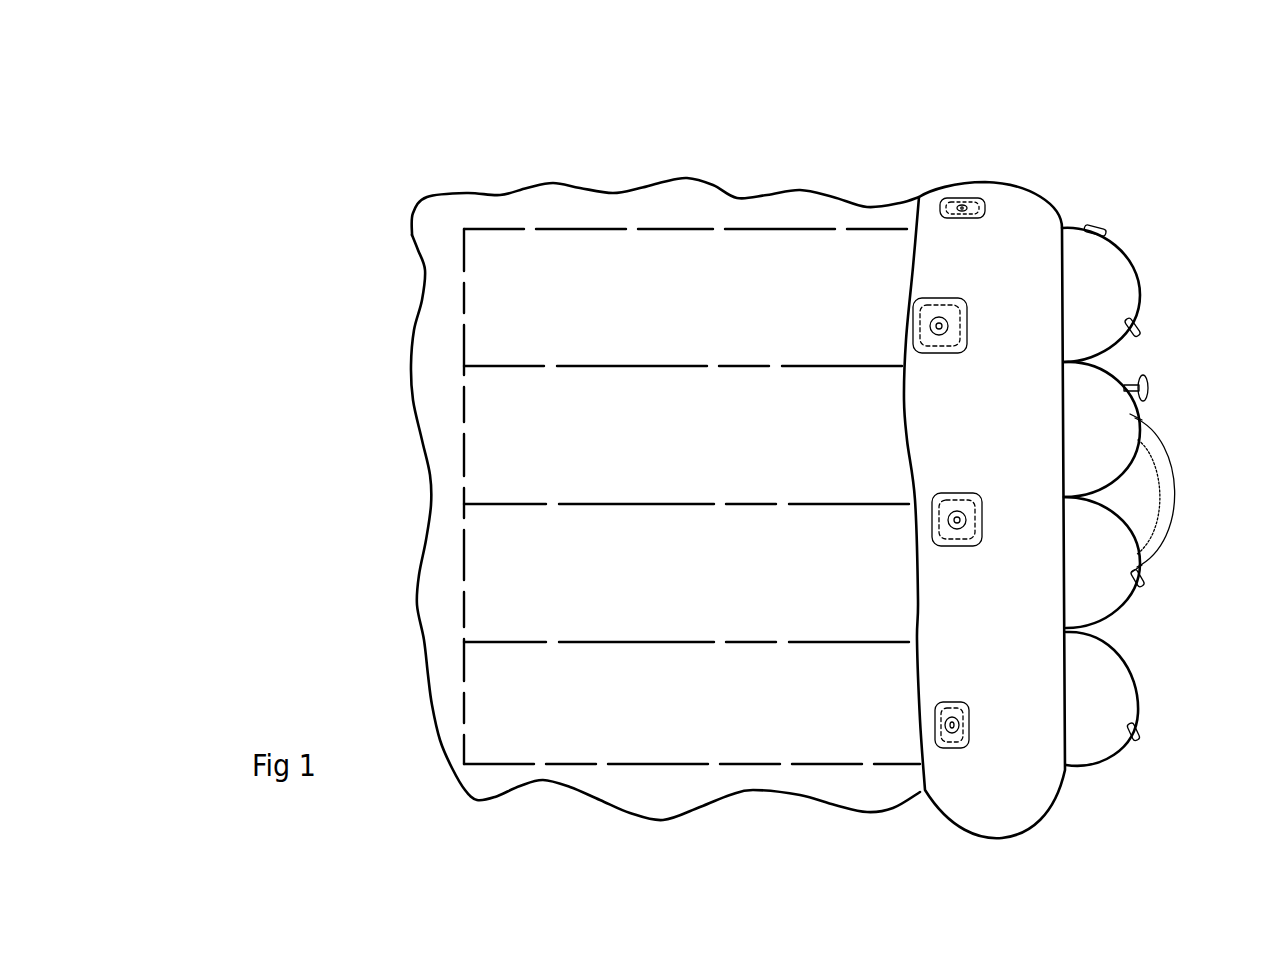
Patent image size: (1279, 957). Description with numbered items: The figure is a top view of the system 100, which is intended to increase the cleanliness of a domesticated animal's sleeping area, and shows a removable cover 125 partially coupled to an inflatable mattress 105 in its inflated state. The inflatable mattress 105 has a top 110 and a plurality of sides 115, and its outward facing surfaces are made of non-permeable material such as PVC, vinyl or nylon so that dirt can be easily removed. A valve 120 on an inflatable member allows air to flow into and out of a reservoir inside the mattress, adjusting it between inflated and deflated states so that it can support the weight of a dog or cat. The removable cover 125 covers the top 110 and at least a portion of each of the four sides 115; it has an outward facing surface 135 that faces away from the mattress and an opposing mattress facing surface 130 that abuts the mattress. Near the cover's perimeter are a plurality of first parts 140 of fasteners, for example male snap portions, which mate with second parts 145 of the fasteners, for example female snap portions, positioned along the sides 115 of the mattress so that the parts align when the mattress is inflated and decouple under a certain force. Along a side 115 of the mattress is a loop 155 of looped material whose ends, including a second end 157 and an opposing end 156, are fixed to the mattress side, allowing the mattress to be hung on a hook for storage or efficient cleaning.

The system 100 is at (324, 100).
The inflatable mattress 105 is at (1125, 268).
The top 110 is at (1104, 724).
The sides 115 is at (1115, 606).
The valve 120 is at (1150, 389).
The removable cover 125 is at (438, 688).
The mattress facing surface 130 is at (1018, 195).
The outward facing surface 135 is at (564, 768).
The first parts of fasteners 140 is at (963, 203).
The second parts of fasteners 145 is at (1097, 224).
The loop 155 is at (1176, 487).
The band lower end 156 is at (1140, 558).
The second end 157 is at (1140, 420).